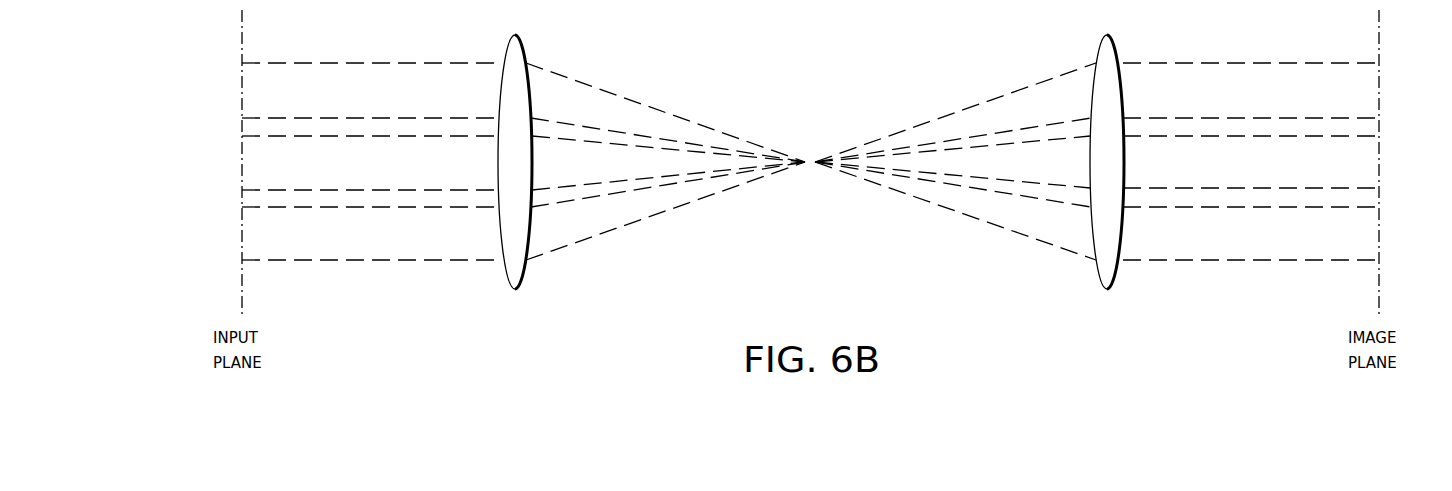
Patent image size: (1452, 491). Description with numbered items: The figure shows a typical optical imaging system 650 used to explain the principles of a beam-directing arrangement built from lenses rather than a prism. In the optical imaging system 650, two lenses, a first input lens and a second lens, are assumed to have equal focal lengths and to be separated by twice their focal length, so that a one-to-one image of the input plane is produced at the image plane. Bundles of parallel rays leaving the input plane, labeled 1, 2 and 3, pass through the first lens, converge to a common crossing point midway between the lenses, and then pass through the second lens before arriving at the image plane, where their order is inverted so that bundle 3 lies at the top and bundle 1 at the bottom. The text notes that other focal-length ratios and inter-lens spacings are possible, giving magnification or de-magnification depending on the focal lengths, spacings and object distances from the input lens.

The optical imaging system 650 is at (811, 158).
The first input channel / beam 1 is at (811, 161).
The second input channel / beam 2 is at (811, 163).
The third input channel / beam 3 is at (641, 47).